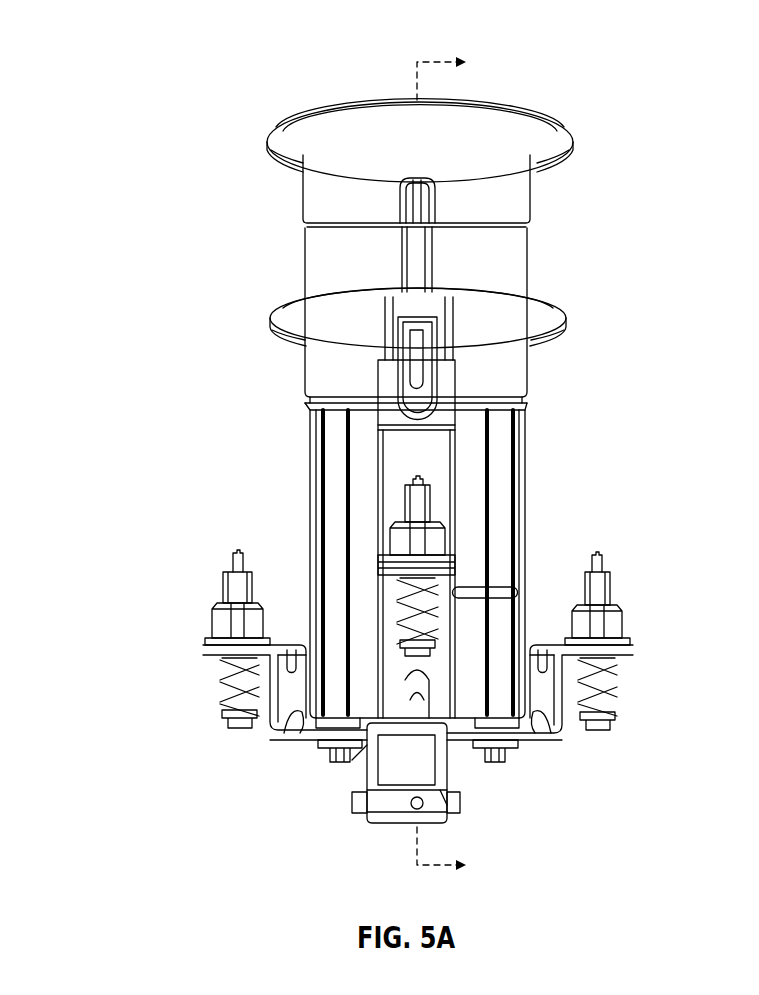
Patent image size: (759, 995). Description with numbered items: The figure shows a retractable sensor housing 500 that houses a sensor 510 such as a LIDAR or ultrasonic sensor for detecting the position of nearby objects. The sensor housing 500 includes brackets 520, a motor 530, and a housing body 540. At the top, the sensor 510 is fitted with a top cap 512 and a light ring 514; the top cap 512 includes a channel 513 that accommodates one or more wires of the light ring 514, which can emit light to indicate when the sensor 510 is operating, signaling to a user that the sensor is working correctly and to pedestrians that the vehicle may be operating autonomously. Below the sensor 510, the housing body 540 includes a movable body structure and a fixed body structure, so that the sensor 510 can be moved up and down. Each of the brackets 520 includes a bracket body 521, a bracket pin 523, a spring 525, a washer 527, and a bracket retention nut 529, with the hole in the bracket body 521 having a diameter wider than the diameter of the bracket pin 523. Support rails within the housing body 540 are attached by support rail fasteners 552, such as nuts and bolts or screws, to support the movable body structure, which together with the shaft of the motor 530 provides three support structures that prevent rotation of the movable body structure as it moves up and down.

The retractable sensor housing 500 is at (284, 100).
The sensor 510 is at (521, 200).
The top cap 512 is at (537, 118).
The channel 513 is at (428, 262).
The light ring 514 is at (563, 158).
The bracket 520 is at (455, 565).
The bracket body 521 is at (560, 736).
The bracket pin 523 is at (605, 563).
The spring 525 is at (612, 700).
The washer 527 is at (620, 660).
The bracket retention nut 529 is at (612, 603).
The motor 530 is at (433, 778).
The housing body 540 is at (527, 440).
The support rail fastener 552 is at (340, 764).